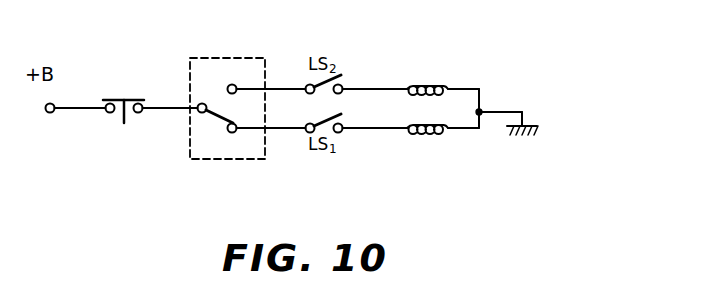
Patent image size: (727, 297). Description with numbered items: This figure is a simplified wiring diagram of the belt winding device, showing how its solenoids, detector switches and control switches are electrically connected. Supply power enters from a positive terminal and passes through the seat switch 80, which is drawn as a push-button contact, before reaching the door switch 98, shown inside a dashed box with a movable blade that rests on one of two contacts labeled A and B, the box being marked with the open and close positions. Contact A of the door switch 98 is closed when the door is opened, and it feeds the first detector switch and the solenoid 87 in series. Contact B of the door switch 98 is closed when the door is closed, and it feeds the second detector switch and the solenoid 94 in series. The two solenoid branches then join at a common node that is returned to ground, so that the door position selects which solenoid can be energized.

The seat switch 80 is at (115, 113).
The door switch 98 is at (189, 137).
The solenoid 94 is at (424, 83).
The solenoid 87 is at (420, 134).